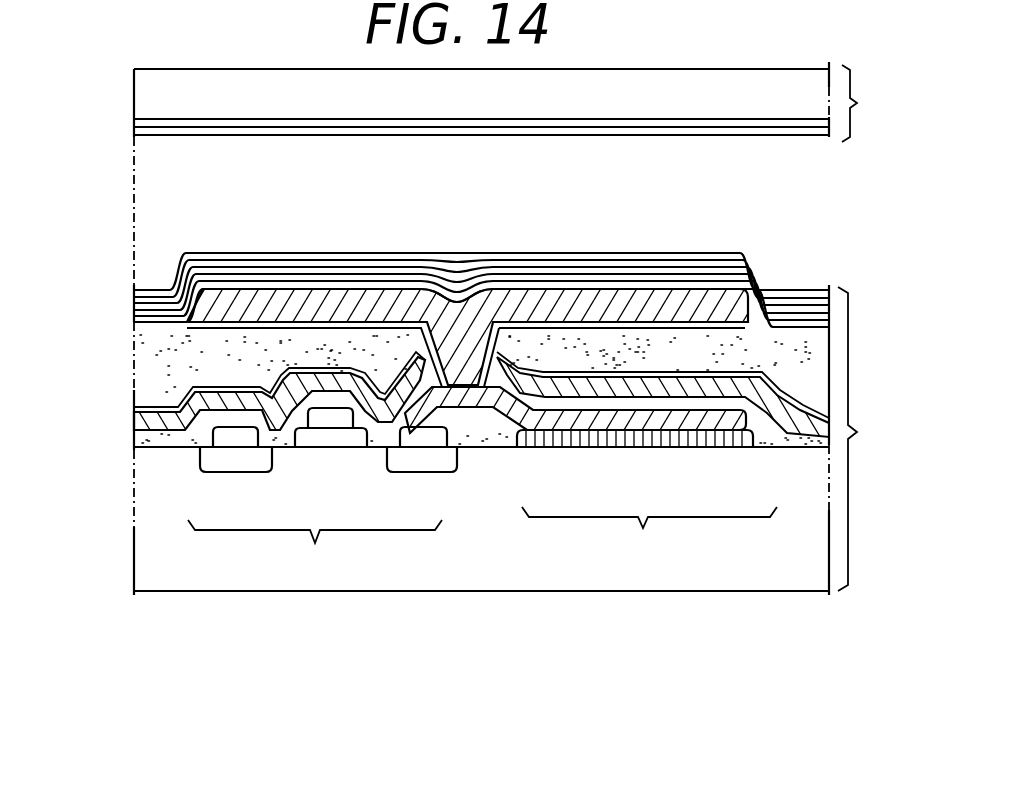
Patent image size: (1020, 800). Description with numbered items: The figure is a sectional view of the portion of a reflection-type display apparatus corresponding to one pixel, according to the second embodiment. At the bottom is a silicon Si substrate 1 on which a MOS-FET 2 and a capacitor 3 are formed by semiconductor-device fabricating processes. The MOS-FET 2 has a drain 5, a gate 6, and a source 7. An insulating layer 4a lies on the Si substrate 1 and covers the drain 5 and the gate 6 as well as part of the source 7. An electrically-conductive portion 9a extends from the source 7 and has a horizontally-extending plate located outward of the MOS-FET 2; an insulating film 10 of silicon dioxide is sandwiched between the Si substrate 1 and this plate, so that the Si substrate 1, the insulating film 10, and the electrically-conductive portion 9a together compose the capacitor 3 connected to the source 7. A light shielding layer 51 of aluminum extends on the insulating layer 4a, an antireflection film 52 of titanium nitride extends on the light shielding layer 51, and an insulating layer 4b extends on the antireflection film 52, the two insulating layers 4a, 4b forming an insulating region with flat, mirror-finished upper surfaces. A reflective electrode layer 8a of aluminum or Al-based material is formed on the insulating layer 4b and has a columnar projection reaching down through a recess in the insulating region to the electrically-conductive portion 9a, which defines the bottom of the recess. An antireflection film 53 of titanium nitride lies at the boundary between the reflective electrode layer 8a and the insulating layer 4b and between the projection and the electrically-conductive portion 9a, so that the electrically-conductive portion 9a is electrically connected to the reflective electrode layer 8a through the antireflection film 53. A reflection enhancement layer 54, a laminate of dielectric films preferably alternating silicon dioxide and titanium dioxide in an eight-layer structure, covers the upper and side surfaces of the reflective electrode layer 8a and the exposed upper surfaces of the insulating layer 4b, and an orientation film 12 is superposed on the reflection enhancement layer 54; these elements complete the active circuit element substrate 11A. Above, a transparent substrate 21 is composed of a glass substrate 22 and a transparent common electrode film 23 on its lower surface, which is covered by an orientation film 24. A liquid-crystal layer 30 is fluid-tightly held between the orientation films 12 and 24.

The Si substrate 1 is at (145, 548).
The MOS-FET 2 is at (315, 545).
The capacitor 3 is at (643, 530).
The insulating layer 4a is at (160, 445).
The insulating layer 4b is at (140, 333).
The drain 5 is at (227, 465).
The gate 6 is at (323, 440).
The source 7 is at (417, 462).
The reflective electrode layer 8a is at (210, 290).
The electrically-conductive portion 9a is at (510, 412).
The insulating film 10 is at (680, 443).
The active circuit element substrate 11A is at (860, 432).
The orientation film 12 is at (167, 292).
The transparent substrate 21 is at (870, 103).
The glass substrate 22 is at (140, 92).
The common electrode film 23 is at (150, 125).
The orientation film 24 is at (792, 133).
The liquid-crystal layer 30 is at (800, 208).
The light shielding layer 51 is at (140, 427).
The antireflection film 52 is at (140, 407).
The antireflection film 53 is at (731, 325).
The reflection enhancement layer 54 is at (632, 275).